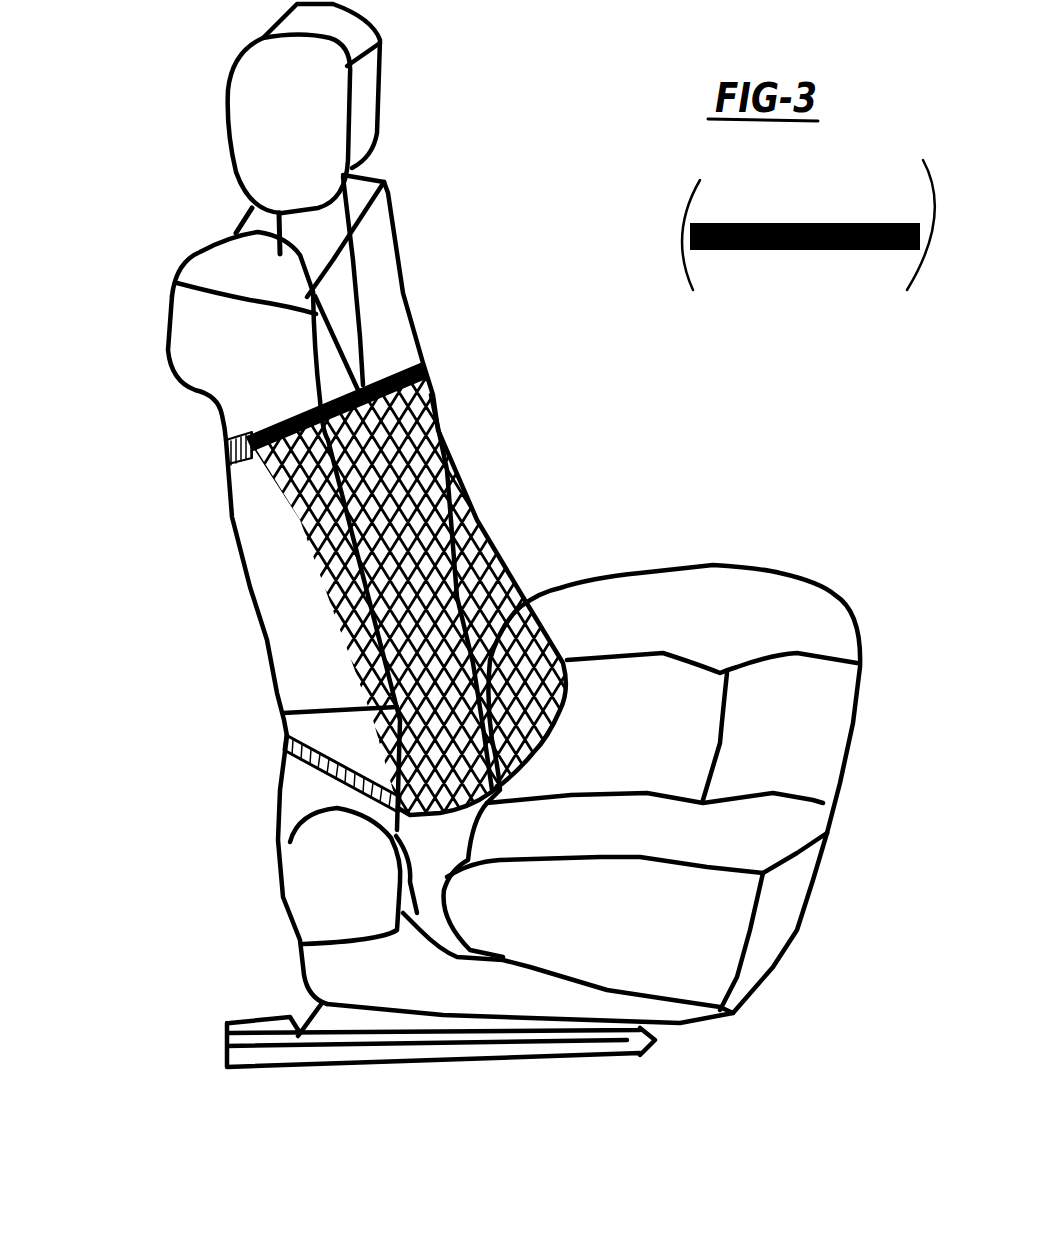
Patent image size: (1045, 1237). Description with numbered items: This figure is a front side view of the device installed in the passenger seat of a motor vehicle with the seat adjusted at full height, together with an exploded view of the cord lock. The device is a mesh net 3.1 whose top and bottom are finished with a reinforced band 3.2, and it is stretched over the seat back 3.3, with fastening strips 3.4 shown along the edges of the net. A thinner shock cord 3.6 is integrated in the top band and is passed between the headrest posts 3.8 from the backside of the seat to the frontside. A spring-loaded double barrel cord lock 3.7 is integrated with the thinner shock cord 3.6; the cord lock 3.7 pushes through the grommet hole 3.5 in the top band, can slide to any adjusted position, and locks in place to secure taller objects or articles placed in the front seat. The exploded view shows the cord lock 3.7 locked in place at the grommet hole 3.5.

The net pocket 3.1 is at (463, 470).
The edge band 3.2 is at (380, 373).
The seat back 3.3 is at (310, 587).
The fastening strip 3.4 is at (229, 451).
The grommet hole 3.5 is at (372, 383).
The thinner shock cord 3.6 is at (247, 227).
The spring-loaded double barrel cord lock 3.7 is at (376, 388).
The headrest posts 3.8 is at (267, 218).